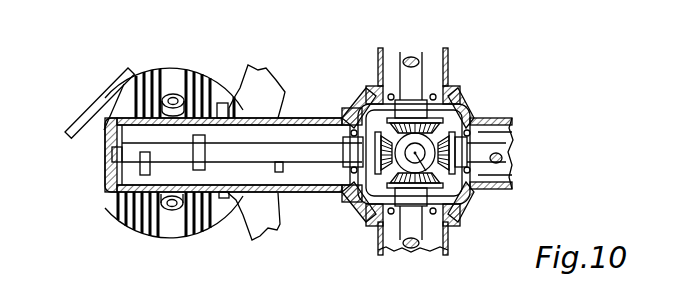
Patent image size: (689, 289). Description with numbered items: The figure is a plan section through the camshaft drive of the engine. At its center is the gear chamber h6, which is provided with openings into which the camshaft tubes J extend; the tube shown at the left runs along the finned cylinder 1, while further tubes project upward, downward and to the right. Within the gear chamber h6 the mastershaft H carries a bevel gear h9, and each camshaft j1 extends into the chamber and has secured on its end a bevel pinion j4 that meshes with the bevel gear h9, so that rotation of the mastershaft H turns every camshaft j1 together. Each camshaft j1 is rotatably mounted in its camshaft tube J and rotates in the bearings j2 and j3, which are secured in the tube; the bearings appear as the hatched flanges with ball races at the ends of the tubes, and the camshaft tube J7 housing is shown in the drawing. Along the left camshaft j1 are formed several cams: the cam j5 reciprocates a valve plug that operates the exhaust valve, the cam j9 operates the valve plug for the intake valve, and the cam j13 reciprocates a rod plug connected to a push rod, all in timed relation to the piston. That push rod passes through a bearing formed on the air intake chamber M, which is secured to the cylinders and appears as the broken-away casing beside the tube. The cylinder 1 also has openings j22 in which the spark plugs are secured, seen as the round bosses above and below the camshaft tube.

The cylinder 1 is at (110, 205).
The openings j22 is at (174, 252).
The cam j9 is at (201, 133).
The air intake chamber M is at (268, 86).
The shaft housing J7 is at (309, 118).
The bearing j3 is at (110, 169).
The cam j5 is at (136, 193).
The cam j13 is at (280, 173).
The camshaft j1 is at (528, 172).
The camshaft tube J is at (449, 63).
The bearing j2 is at (528, 142).
The bevel pinion j4 is at (440, 127).
The gear chamber h6 is at (470, 113).
The bevel gear h9 is at (445, 180).
The mastershaft H is at (436, 190).